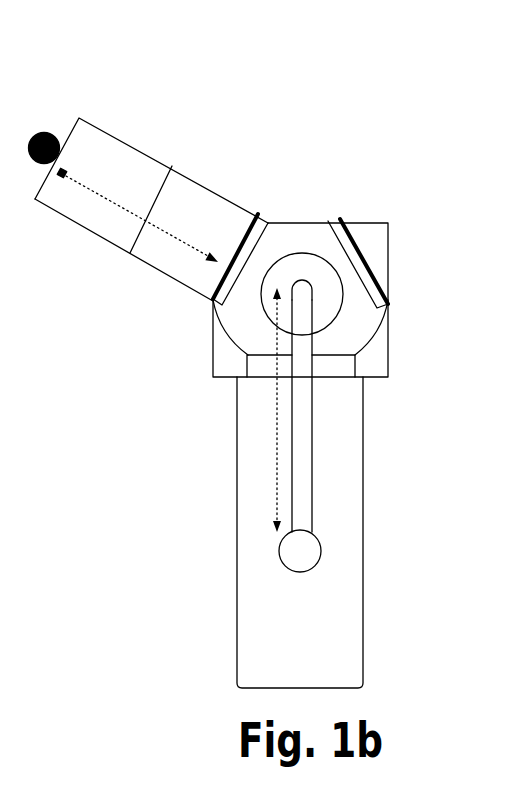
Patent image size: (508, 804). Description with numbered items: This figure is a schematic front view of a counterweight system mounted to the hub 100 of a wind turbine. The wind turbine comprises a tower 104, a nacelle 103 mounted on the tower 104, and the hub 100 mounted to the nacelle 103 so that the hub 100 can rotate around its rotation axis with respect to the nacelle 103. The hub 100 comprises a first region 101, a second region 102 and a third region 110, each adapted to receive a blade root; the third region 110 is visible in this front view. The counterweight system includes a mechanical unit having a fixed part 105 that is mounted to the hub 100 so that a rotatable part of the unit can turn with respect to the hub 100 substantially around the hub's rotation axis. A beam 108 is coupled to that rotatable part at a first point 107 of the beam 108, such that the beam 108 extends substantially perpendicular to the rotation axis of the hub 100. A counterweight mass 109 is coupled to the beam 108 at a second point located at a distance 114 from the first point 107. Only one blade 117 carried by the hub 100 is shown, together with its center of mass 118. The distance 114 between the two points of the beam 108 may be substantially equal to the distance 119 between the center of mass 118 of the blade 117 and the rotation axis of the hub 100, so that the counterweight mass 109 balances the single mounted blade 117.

The hub 100 is at (284, 212).
The first region 101 is at (372, 251).
The second region 102 is at (331, 369).
The nacelle 103 is at (375, 232).
The tower 104 is at (337, 610).
The fixed part 105 is at (298, 270).
The first point 107 is at (300, 284).
The beam 108 is at (301, 503).
The counterweight mass 109 is at (302, 552).
The third region 110 is at (212, 284).
The distance 114 is at (277, 412).
The blade 117 is at (132, 168).
The center of mass 118 is at (48, 129).
The distance 119 is at (108, 198).